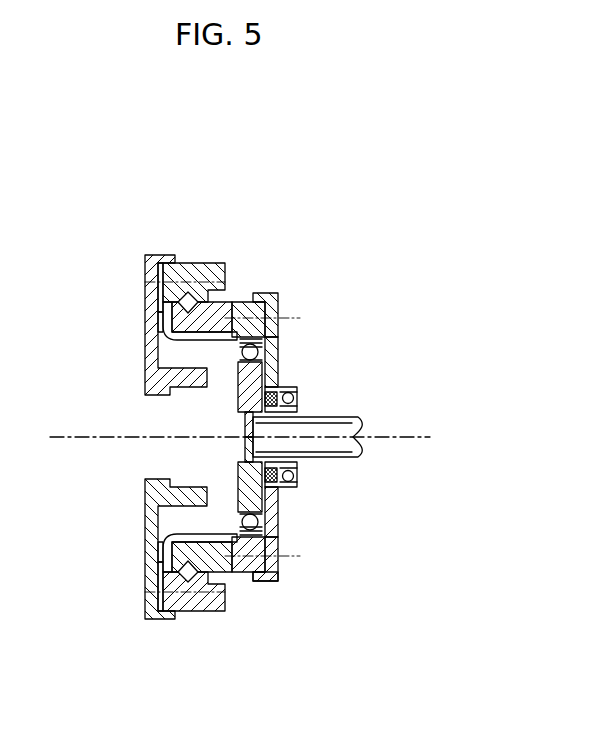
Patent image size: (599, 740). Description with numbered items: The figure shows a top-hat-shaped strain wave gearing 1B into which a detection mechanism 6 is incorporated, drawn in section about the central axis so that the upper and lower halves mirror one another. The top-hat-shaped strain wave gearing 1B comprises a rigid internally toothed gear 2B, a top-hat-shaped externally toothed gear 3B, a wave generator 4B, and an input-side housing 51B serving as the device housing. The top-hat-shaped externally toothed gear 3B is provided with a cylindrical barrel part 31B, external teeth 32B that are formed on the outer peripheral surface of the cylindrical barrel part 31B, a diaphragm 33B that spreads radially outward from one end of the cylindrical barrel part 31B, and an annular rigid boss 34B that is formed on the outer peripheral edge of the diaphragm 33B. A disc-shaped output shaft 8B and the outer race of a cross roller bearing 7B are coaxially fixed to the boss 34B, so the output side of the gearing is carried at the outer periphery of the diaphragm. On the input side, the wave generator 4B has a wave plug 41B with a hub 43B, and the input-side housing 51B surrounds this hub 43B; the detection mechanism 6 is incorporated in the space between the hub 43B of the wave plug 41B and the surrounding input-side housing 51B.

The top-hat-shaped strain wave gearing 1B is at (323, 221).
The rigid internally toothed gear 2B is at (255, 319).
The top-hat-shaped externally toothed gear 3B is at (214, 332).
The wave generator 4B is at (269, 372).
The detection mechanism 6 is at (290, 490).
The cross roller bearing 7B is at (203, 276).
The disc-shaped output shaft 8B is at (139, 267).
The cylindrical barrel part 31B is at (190, 340).
The external teeth 32B is at (269, 327).
The diaphragm 33B is at (150, 319).
The annular rigid boss 34B is at (160, 289).
The wave plug 41B is at (270, 488).
The hub 43B is at (298, 463).
The input-side housing 51B is at (284, 569).